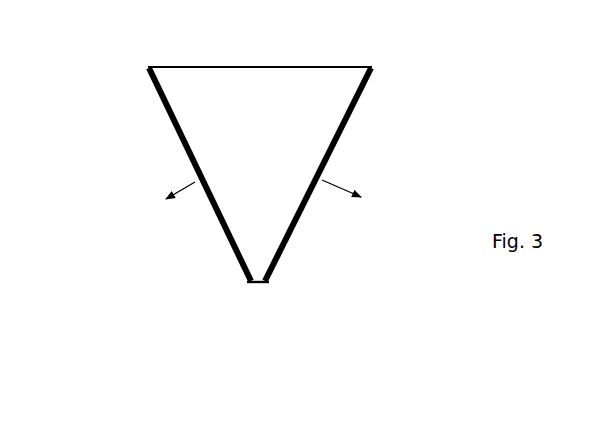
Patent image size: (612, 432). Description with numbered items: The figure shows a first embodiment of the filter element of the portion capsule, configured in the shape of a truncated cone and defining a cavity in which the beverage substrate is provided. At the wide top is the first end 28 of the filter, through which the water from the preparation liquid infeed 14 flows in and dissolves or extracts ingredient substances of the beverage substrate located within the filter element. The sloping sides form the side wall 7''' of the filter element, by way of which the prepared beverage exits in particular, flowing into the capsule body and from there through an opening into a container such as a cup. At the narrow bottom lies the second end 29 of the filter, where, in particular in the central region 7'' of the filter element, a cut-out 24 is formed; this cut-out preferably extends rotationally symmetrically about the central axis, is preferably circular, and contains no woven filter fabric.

The preparation liquid infeed 14 is at (261, 66).
The first end of the filter 28 is at (311, 54).
The second end of the filter 29 is at (293, 288).
The cut-out 24 is at (261, 296).
The central region of the filter element 7'' is at (307, 328).
The side wall of the filter element 7''' is at (144, 174).